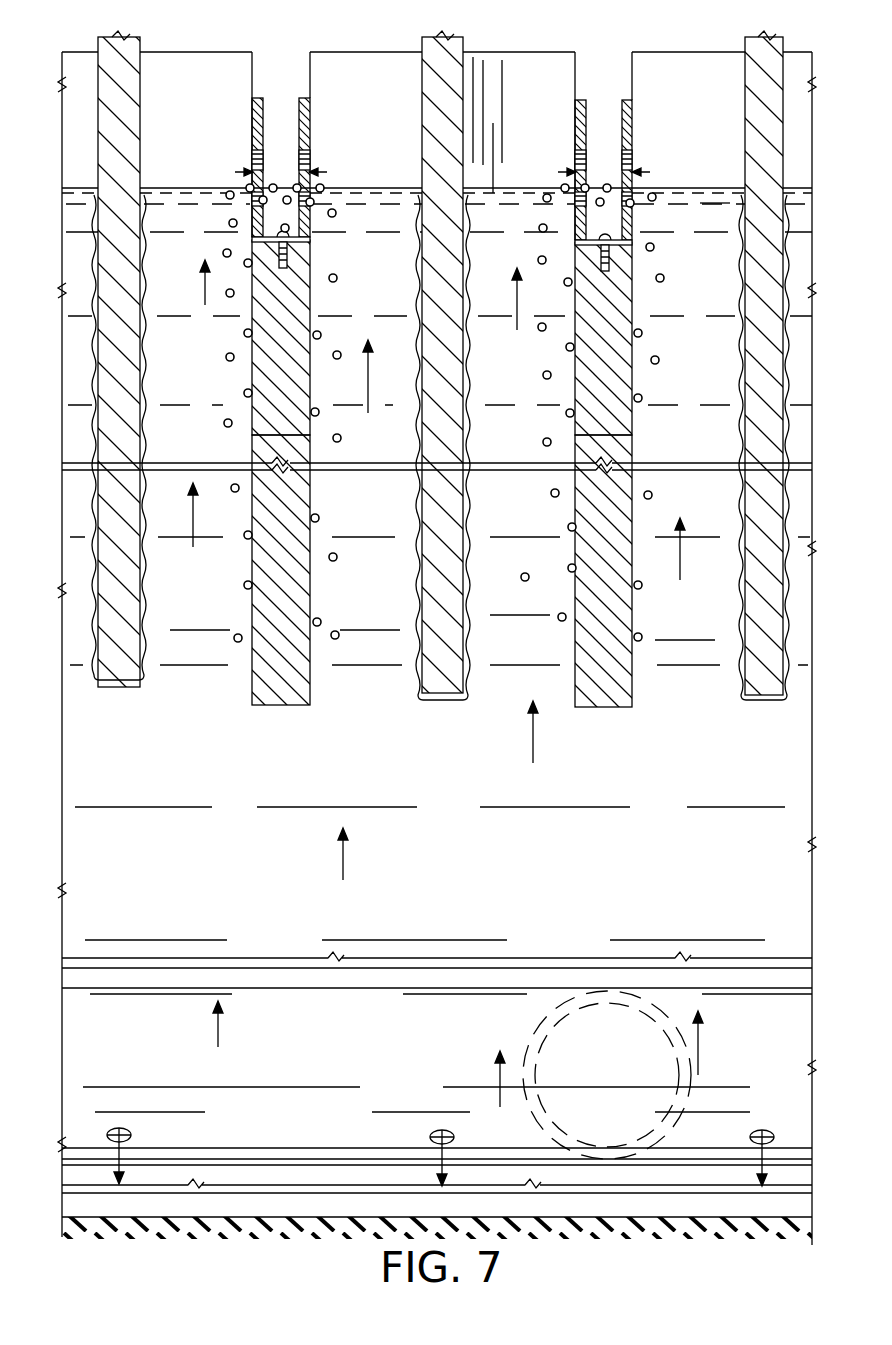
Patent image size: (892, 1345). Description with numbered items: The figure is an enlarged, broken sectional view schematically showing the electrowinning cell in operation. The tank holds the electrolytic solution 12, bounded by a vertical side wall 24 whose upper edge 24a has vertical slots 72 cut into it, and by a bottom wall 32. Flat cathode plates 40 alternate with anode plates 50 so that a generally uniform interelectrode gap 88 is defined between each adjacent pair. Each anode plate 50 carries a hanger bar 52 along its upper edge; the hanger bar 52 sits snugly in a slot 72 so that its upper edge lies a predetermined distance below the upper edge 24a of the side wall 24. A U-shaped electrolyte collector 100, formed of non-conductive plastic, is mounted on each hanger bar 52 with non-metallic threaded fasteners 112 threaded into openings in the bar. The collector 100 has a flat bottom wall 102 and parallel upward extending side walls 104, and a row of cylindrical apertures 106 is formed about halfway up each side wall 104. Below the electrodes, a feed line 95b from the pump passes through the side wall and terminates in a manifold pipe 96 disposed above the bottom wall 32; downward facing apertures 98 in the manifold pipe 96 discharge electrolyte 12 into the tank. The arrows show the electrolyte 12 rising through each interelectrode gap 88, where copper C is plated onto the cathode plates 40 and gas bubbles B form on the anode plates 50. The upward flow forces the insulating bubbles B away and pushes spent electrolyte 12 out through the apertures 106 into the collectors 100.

The electrolytic solution 12 is at (697, 200).
The side wall 24 is at (498, 82).
The upper edge of side wall 24a is at (192, 50).
The bottom wall 32 is at (273, 1217).
The cathode plate 40 is at (118, 102).
The anode plate 50 is at (293, 693).
The hanger bar 52 is at (283, 370).
The vertical slot 72 is at (292, 77).
The interelectrode gap 88 is at (192, 630).
The feed line 95b is at (540, 1027).
The manifold pipe 96 is at (365, 1000).
The downward facing aperture 98 is at (128, 1123).
The electrolyte collector 100 is at (262, 100).
The bottom wall of collector 102 is at (252, 262).
The side wall of collector 104 is at (307, 127).
The aperture 106 is at (252, 157).
The threaded fastener 112 is at (292, 237).
The gas bubbles B is at (226, 420).
The copper C is at (462, 280).